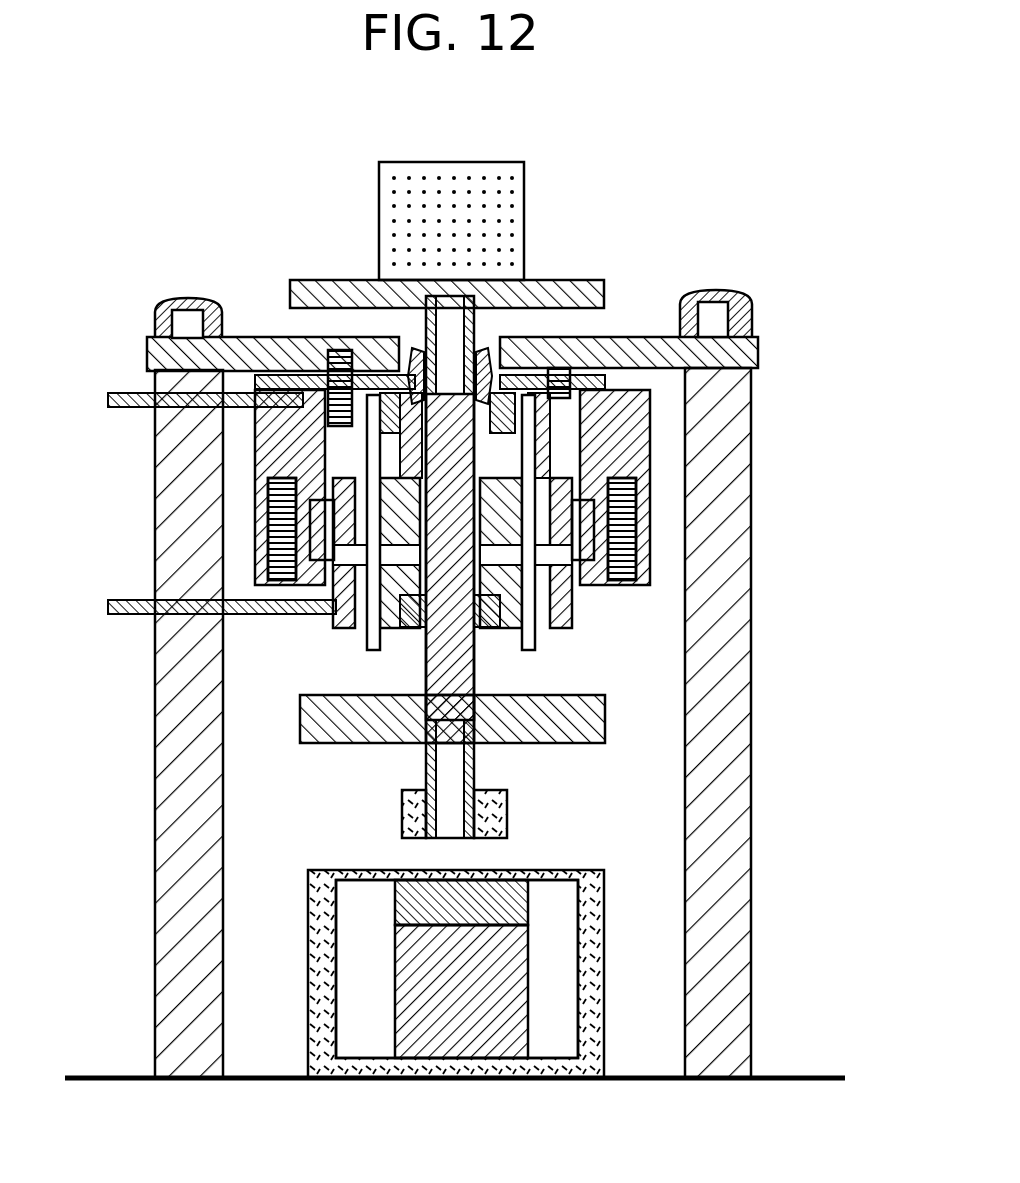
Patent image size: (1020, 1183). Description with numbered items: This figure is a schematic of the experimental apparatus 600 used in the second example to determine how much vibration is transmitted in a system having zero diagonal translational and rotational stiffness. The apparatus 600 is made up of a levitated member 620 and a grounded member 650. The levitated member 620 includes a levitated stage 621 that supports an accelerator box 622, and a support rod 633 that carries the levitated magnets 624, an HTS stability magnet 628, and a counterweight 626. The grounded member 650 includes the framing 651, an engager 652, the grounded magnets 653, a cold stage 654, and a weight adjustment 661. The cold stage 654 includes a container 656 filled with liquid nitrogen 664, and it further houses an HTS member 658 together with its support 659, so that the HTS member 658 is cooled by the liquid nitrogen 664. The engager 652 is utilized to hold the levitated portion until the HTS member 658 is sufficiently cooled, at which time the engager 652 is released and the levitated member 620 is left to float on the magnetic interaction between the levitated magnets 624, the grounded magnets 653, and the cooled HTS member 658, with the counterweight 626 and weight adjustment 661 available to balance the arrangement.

The experimental apparatus 600 is at (786, 166).
The levitated member 620 is at (464, 208).
The levitated stage 621 is at (568, 282).
The accelerator box 622 is at (490, 185).
The levitated magnets 624 is at (468, 470).
The counterweight 626 is at (607, 720).
The HTS stability magnet 628 is at (508, 810).
The support rod 633 is at (470, 322).
The grounded member 650 is at (116, 722).
The framing 651 is at (740, 502).
The engager 652 is at (110, 398).
The grounded magnets 653 is at (262, 482).
The cold stage 654 is at (606, 968).
The container 656 is at (604, 884).
The HTS member 658 is at (505, 895).
The support 659 is at (472, 958).
The weight adjustment 661 is at (115, 606).
The liquid nitrogen 664 is at (555, 1018).